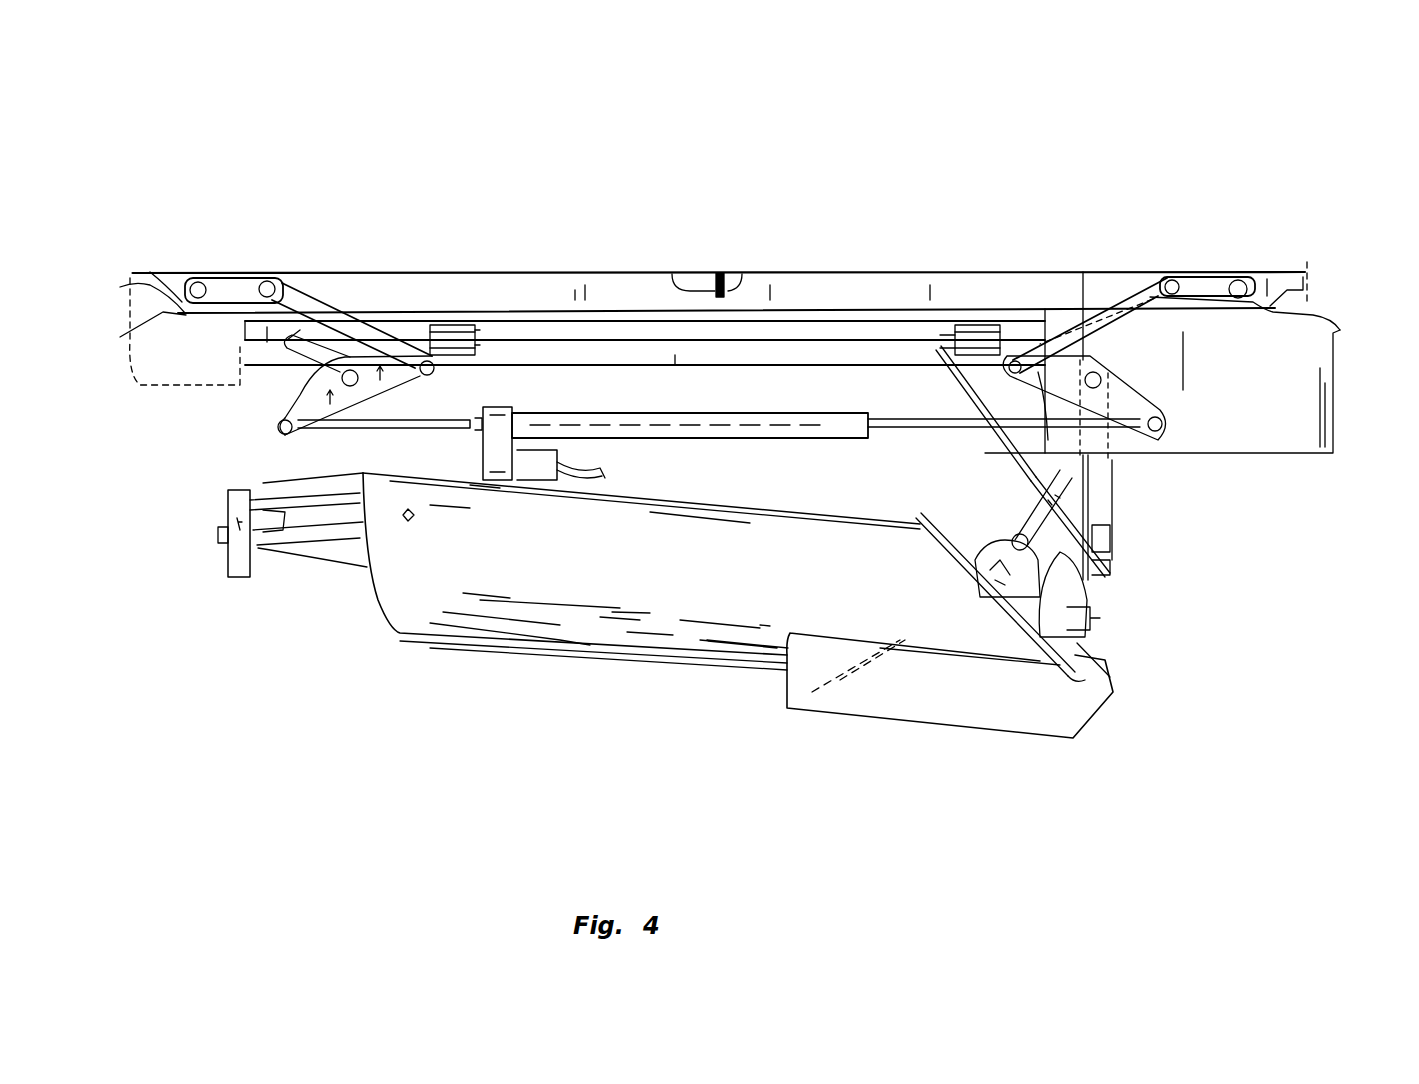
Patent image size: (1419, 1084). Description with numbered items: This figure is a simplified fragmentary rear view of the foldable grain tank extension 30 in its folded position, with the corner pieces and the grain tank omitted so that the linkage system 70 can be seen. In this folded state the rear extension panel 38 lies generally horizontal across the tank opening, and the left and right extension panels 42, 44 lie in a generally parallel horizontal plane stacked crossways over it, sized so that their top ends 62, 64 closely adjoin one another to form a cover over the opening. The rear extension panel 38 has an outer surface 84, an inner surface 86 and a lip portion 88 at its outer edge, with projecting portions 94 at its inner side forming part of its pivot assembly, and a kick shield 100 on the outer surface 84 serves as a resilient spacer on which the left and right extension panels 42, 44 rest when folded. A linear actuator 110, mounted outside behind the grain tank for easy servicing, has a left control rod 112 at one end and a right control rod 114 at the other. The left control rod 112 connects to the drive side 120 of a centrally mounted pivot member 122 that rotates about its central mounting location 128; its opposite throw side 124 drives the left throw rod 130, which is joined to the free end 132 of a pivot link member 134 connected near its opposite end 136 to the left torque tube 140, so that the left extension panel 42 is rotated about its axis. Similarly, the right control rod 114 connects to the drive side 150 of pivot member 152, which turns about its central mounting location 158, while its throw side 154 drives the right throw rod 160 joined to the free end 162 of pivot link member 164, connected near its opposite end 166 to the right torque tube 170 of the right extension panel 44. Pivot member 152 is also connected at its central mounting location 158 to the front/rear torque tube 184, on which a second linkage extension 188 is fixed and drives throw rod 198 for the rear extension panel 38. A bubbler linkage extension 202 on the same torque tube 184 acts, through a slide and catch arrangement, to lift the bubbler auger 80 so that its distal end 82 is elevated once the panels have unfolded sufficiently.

The extension 30 is at (1064, 180).
The rear extension panel 38 is at (548, 335).
The left extension panel 42 is at (482, 273).
The right extension panel 44 is at (870, 273).
The top end 62 is at (672, 274).
The top end 64 is at (742, 274).
The linkage system 70 is at (238, 436).
The bubbler auger 80 is at (548, 600).
The distal end 82 is at (315, 570).
The outer surface 84 is at (618, 300).
The inner surface 86 is at (790, 345).
The lip portion 88 is at (715, 353).
The projecting portions 94 is at (410, 300).
The kick shield 100 is at (802, 300).
The linear actuator 110 is at (548, 490).
The left control rod 112 is at (362, 425).
The right control rod 114 is at (930, 405).
The drive side 120 is at (300, 440).
The pivot member 122 is at (260, 398).
The throw side 124 is at (445, 370).
The central mounting location 128 is at (340, 375).
The left throw rod 130 is at (313, 303).
The free end 132 is at (255, 273).
The pivot link member 134 is at (215, 270).
The opposite end 136 is at (125, 290).
The left torque tube 140 is at (170, 327).
The drive side 150 is at (1152, 410).
The pivot member 152 is at (1107, 374).
The throw side 154 is at (1105, 480).
The central mounting location 158 is at (1090, 357).
The right throw rod 160 is at (1082, 300).
The free end 162 is at (1185, 272).
The pivot link member 164 is at (1205, 272).
The opposite end 166 is at (1340, 312).
The right torque tube 170 is at (1245, 272).
The front/rear torque tube 184 is at (1140, 400).
The second linkage extension 188 is at (1125, 475).
The throw rod 198 is at (1010, 450).
The bubbler linkage extension 202 is at (1037, 500).